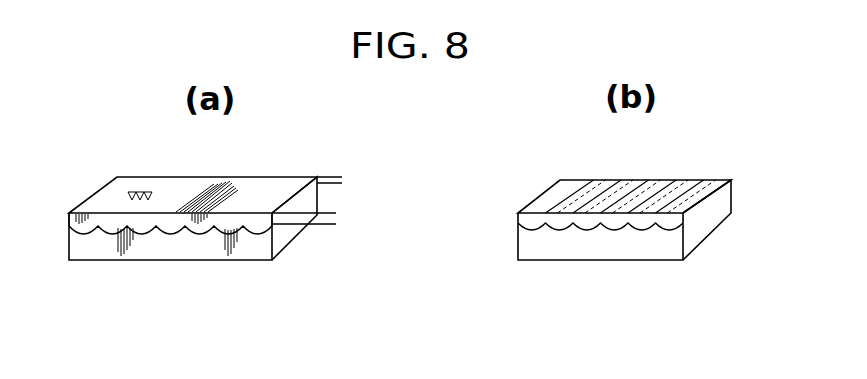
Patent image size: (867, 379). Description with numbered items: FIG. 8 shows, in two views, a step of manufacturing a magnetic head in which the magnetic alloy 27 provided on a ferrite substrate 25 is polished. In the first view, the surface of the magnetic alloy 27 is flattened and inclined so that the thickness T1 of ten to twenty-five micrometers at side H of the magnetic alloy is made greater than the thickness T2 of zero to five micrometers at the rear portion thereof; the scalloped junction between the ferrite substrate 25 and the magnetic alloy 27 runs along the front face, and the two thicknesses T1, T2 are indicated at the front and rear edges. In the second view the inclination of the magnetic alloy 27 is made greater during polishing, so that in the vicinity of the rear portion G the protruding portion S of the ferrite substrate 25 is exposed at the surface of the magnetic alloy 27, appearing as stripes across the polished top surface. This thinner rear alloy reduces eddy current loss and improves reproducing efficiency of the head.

The ferrite substrate 25 is at (115, 245).
The magnetic alloy 27 is at (260, 183).
The rear portion G is at (195, 176).
The side of the magnetic alloy H is at (178, 225).
The protruding portion S is at (602, 230).
The thickness at side H T1 is at (330, 199).
The thickness at the rear portion T2 is at (338, 165).